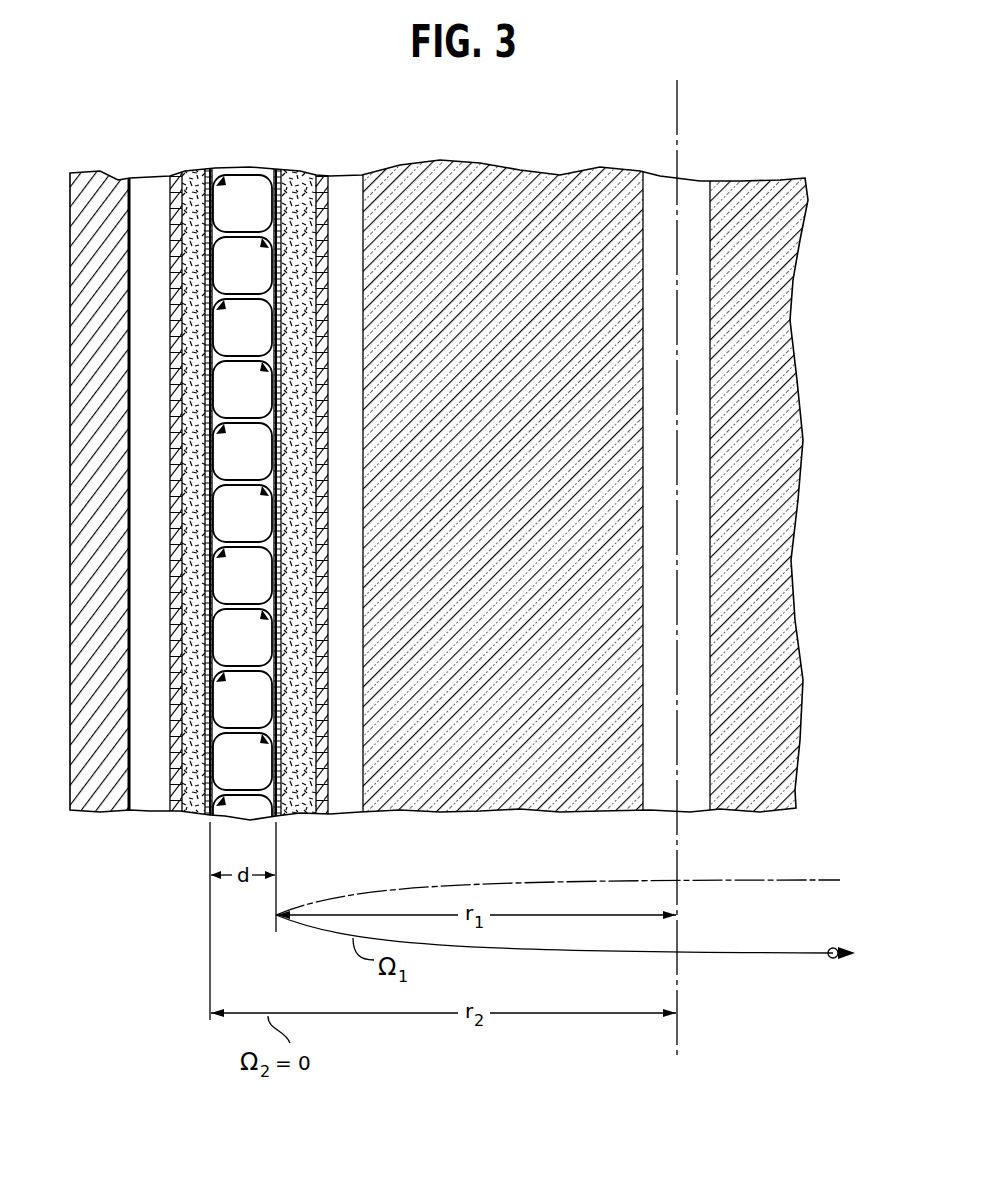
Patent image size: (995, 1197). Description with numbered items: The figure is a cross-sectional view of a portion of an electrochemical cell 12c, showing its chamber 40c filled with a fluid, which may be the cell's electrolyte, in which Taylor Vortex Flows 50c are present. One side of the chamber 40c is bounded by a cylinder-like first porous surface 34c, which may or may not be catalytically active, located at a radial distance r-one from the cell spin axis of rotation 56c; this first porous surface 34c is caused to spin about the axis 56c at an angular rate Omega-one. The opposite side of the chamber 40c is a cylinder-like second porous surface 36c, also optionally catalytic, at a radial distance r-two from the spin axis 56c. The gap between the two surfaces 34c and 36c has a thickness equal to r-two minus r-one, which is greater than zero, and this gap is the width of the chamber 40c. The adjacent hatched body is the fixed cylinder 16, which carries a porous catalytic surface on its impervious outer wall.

The electrochemical cell 12c is at (137, 152).
The cylinder 16 is at (494, 549).
The first porous surface 34c is at (264, 166).
The second porous surface 36c is at (216, 157).
The chamber 40c is at (258, 770).
The Taylor Vortex Flows 50c is at (242, 513).
The cell spin axis of rotation 56c is at (678, 138).